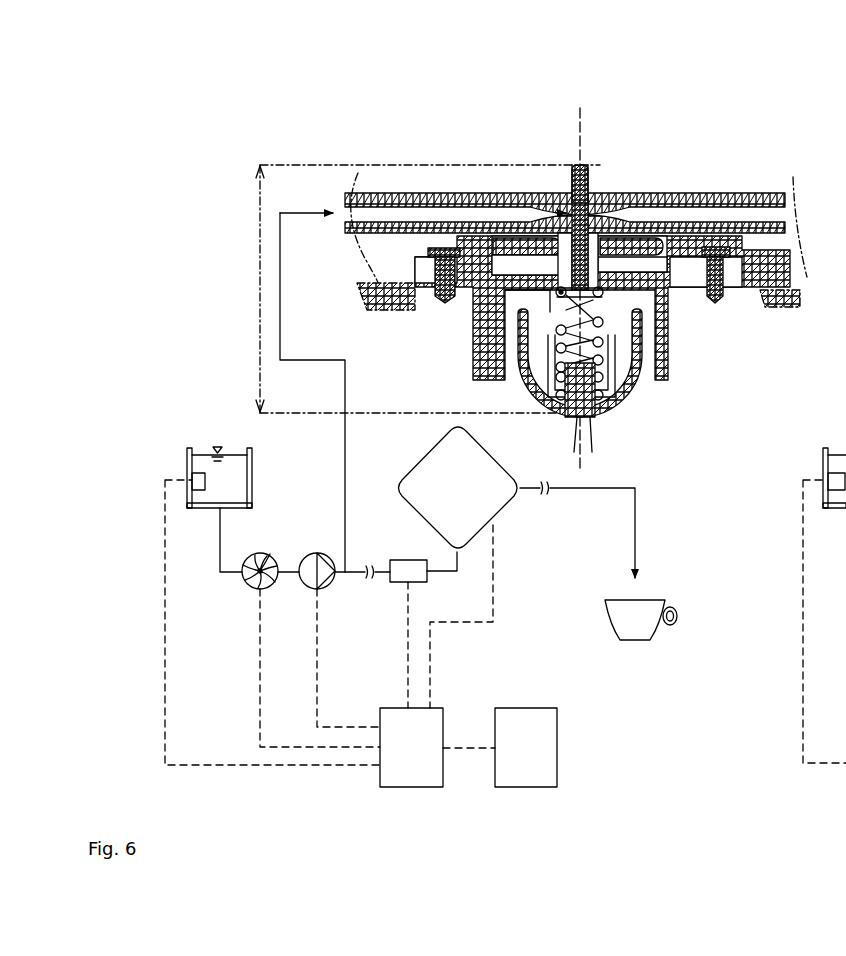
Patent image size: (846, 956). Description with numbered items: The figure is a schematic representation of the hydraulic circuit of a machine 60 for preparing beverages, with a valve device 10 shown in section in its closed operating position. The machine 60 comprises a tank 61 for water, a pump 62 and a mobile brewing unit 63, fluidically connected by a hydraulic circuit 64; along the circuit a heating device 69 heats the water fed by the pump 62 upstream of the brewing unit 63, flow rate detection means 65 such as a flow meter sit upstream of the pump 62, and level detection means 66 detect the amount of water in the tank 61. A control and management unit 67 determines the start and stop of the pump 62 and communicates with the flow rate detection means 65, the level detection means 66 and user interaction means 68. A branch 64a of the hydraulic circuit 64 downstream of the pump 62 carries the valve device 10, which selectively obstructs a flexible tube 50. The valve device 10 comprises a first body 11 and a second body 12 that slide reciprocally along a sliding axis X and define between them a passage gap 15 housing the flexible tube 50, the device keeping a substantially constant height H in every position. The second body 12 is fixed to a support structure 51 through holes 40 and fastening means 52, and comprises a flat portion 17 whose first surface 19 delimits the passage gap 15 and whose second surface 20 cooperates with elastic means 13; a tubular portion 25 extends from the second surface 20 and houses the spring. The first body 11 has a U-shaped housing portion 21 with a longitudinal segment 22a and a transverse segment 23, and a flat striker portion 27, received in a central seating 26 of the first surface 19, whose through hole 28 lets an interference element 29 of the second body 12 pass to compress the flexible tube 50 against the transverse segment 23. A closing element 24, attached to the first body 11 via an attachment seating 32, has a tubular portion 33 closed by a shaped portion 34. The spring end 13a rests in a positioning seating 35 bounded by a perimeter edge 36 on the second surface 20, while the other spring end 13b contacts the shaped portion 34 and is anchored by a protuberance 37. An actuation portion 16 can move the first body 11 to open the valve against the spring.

The valve device 10 is at (602, 110).
The first body 11 is at (591, 168).
The second body 12 is at (749, 277).
The elastic means 13 is at (570, 378).
The spring end 13a is at (505, 262).
The spring end 13b is at (610, 405).
The passage gap 15 is at (518, 192).
The actuation portion 16 is at (566, 422).
The flat portion 17 is at (715, 225).
The first surface 19 is at (476, 252).
The second surface 20 is at (556, 350).
The housing portion 21 is at (568, 181).
The longitudinal segment 22a is at (600, 264).
The transverse segment 23 is at (588, 186).
The closing element 24 is at (599, 422).
The tubular portion 25 is at (548, 357).
The central seating 26 is at (510, 272).
The striker portion 27 is at (690, 268).
The through hole 28 is at (543, 272).
The interference element 29 is at (562, 292).
The attachment seating 32 is at (586, 440).
The tubular portion 33 is at (520, 330).
The shaped portion 34 is at (598, 414).
The positioning seating 35 is at (589, 328).
The perimeter edge 36 is at (613, 300).
The protuberance 37 is at (545, 398).
The through holes 40 is at (748, 254).
The flexible tube 50 is at (393, 191).
The support structure 51 is at (393, 293).
The fastening means 52 is at (435, 244).
The machine for preparing beverages 60 is at (318, 157).
The tank 61 is at (186, 445).
The pump 62 is at (332, 587).
The brewing unit 63 is at (469, 498).
The hydraulic circuit 64 is at (218, 574).
The branch 64a is at (282, 322).
The flow rate detection means 65 is at (265, 556).
The level detection means 66 is at (210, 480).
The control and management unit 67 is at (422, 758).
The user interaction means 68 is at (536, 758).
The heating device 69 is at (407, 570).
The height H is at (419, 289).
The sliding axis X is at (578, 118).